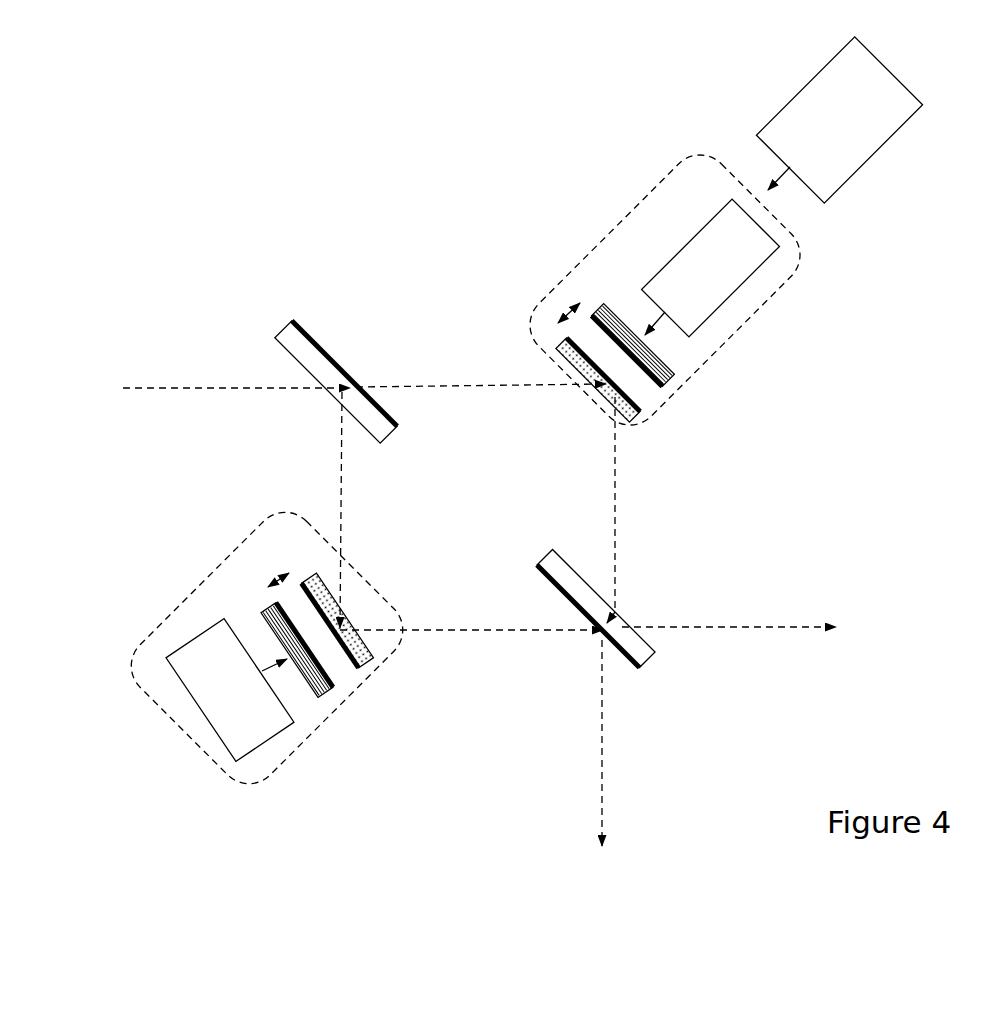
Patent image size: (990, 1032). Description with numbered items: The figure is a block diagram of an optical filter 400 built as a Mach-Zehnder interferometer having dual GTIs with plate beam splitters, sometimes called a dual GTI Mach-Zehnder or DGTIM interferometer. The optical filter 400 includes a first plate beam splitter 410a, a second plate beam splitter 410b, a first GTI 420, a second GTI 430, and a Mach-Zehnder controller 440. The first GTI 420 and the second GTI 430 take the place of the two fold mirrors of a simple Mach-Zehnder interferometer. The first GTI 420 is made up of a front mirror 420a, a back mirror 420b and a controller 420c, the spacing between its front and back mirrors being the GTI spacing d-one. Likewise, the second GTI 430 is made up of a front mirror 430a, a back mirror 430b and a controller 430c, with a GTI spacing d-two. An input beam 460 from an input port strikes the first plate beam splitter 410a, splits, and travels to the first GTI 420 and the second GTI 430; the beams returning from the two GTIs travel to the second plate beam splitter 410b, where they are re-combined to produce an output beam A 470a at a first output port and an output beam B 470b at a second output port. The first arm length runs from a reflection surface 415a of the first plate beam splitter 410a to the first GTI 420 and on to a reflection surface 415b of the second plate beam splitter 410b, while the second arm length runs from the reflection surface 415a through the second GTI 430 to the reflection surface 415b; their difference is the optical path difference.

The optical filter 400 is at (870, 478).
The first plate beam splitter 410a is at (283, 345).
The second plate beam splitter 410b is at (629, 680).
The reflection surface 415a is at (293, 322).
The reflection surface 415b is at (640, 670).
The GTI 1 420 is at (207, 573).
The GTI 1 front mirror 420a is at (378, 695).
The GTI 1 back mirror 420b is at (360, 730).
The GTI 1 controller 420c is at (248, 757).
The GTI 2 430 is at (632, 197).
The GTI 2 front mirror 430a is at (640, 420).
The GTI 2 back mirror 430b is at (677, 380).
The GTI 2 controller 430c is at (762, 268).
The Mach-Zehnder controller 440 is at (880, 153).
The input beam 460 is at (363, 388).
The output beam A 470a is at (769, 648).
The output beam B 470b is at (644, 772).